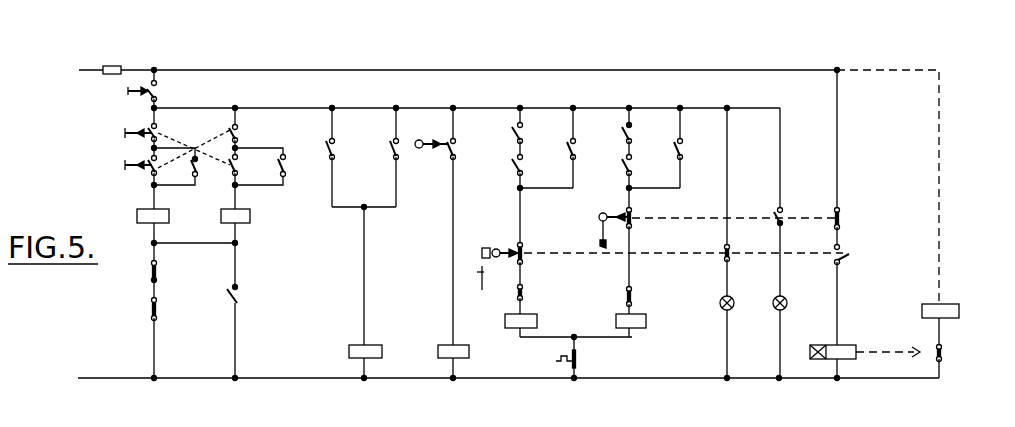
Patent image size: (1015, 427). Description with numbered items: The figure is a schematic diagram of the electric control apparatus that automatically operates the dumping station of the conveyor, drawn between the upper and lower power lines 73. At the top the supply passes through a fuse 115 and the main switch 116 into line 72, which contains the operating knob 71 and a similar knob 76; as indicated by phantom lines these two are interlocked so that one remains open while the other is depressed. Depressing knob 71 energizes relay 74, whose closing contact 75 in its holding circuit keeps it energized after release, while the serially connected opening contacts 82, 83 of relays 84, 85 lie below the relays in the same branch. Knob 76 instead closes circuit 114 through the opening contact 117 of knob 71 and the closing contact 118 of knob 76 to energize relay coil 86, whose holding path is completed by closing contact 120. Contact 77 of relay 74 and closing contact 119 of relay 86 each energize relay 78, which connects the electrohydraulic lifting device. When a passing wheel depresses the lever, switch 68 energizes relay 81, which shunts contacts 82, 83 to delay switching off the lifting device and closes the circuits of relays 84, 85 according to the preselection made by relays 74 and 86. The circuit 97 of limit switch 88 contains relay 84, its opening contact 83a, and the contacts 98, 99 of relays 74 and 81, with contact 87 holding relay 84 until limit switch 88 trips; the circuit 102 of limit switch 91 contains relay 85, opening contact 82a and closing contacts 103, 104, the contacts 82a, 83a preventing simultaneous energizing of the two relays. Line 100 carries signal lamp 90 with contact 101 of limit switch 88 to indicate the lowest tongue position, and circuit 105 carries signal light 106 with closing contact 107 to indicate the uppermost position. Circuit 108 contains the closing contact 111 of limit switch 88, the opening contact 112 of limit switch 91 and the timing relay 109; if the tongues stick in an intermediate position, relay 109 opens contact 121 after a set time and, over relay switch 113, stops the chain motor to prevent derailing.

The power lines 73 is at (88, 70).
The fuse 115 is at (114, 67).
The main switch 116 is at (158, 85).
The knob 76 is at (135, 126).
The operating knob 71 is at (133, 170).
The closing contact 75 is at (197, 163).
The opening contact 117 is at (239, 130).
The closing contact 118 is at (237, 162).
The closing contact 120 is at (284, 167).
The relay 74 is at (146, 223).
The relay coil 86 is at (251, 218).
The opening contact 82 is at (158, 272).
The opening contact 83 is at (158, 309).
The line 72 is at (157, 345).
The circuit 114 is at (236, 265).
The contact 77 is at (336, 144).
The closing contact 119 is at (392, 156).
The switch 68 is at (430, 150).
The relay 78 is at (372, 345).
The relay 81 is at (470, 354).
The contact 99 is at (524, 133).
The contact 98 is at (524, 173).
The contact 87 is at (577, 145).
The circuit 97 is at (522, 213).
The limit switch 88 is at (482, 252).
The opening contact 83a is at (524, 293).
The relay 84 is at (538, 326).
The closing contact 104 is at (628, 130).
The closing contact 103 is at (633, 168).
The limit switch 91 is at (601, 234).
The circuit 102 is at (633, 273).
The opening contact 82a is at (633, 295).
The relay 85 is at (646, 326).
The contact 101 is at (730, 252).
The signal lamp 90 is at (722, 310).
The line 100 is at (726, 367).
The circuit 105 is at (779, 362).
The signal light 106 is at (783, 310).
The closing contact 107 is at (785, 218).
The opening contact 112 is at (840, 219).
The closing contact 111 is at (846, 263).
The circuit 108 is at (838, 338).
The timing relay 109 is at (858, 346).
The relay switch 113 is at (960, 318).
The contact 121 is at (943, 355).